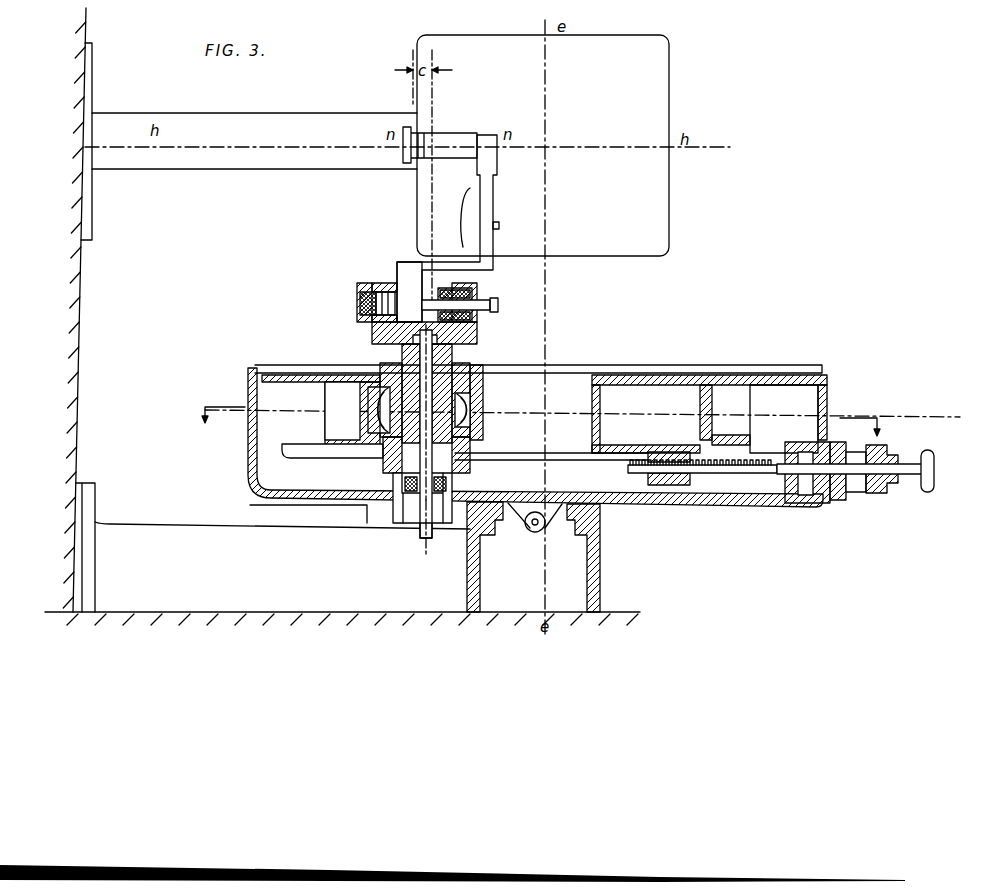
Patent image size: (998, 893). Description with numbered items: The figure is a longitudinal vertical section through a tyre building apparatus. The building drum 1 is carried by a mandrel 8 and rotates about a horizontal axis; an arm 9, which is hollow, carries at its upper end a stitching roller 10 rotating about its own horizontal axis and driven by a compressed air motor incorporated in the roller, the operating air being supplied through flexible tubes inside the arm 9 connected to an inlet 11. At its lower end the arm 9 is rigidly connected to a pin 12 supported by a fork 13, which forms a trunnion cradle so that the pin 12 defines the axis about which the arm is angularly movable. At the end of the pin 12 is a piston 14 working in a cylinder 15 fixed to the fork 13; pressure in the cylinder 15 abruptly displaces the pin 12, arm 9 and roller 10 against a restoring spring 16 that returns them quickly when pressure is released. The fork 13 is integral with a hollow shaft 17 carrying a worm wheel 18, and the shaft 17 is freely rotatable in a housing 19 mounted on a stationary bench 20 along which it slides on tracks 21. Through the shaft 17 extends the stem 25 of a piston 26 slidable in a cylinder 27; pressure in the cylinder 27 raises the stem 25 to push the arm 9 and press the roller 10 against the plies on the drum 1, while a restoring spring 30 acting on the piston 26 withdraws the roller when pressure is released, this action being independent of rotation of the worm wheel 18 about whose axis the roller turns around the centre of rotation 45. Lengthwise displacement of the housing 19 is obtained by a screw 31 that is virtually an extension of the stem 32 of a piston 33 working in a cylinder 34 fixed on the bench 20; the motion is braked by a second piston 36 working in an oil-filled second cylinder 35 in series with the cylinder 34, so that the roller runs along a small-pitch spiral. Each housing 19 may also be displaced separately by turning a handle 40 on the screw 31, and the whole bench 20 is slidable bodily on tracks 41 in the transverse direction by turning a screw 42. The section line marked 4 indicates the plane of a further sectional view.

The building drum 1 is at (501, 44).
The section line 4- 4 is at (539, 411).
The mandrel 8 is at (262, 161).
The arm 9 is at (485, 198).
The stitching roller 10 is at (453, 133).
The inlet 11 is at (499, 226).
The pin 12 is at (392, 300).
The fork 13 is at (468, 344).
The piston 14 is at (358, 300).
The cylinder 15 is at (364, 318).
The restoring spring 16 is at (472, 294).
The shaft 17 is at (447, 363).
The worm wheel 18 is at (470, 408).
The housing 19 is at (484, 438).
The bench 20 is at (667, 505).
The tracks 21 is at (303, 375).
The stem 25 is at (413, 458).
The piston 26 is at (410, 492).
The cylinder 27 is at (447, 535).
The restoring spring 30 is at (448, 486).
The screw 31 is at (730, 474).
The stem 32 is at (836, 486).
The piston 33 is at (803, 492).
The cylinder 34 is at (798, 448).
The second cylinder 35 is at (882, 446).
The second piston 36 is at (862, 492).
The handle 40 is at (935, 474).
The tracks 41 is at (501, 532).
The screw 42 is at (535, 534).
The centre of rotation 45 is at (422, 547).